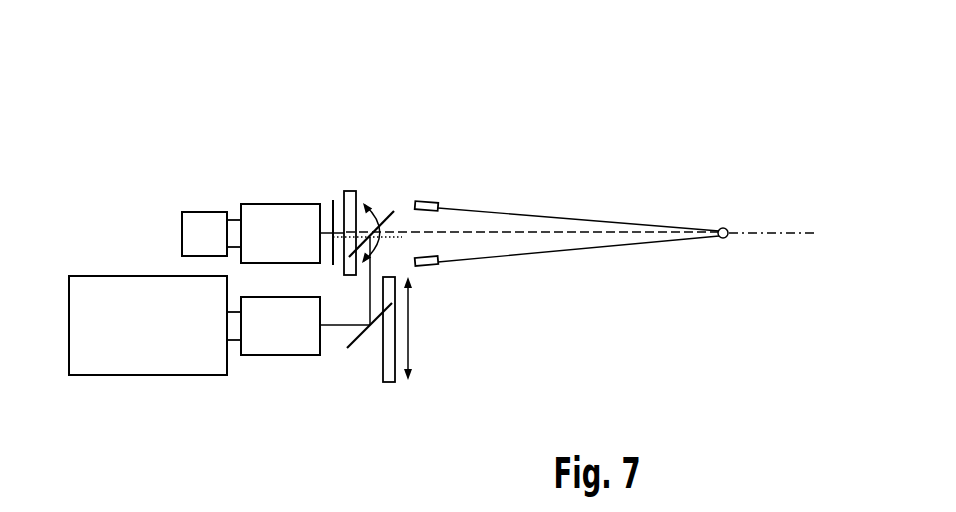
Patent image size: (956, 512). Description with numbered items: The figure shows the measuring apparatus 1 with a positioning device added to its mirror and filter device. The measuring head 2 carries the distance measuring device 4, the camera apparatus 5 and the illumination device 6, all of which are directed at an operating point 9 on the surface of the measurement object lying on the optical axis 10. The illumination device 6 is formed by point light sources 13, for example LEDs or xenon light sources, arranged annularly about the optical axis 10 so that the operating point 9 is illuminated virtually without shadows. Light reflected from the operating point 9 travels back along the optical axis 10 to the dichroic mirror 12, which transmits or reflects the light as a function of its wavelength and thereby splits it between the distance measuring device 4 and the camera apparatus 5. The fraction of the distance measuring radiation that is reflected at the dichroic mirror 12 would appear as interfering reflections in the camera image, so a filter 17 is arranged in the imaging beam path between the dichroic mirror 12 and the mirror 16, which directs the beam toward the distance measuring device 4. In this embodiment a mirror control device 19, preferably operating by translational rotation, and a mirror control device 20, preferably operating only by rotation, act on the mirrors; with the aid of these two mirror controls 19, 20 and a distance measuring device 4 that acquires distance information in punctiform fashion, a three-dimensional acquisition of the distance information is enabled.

The measuring apparatus 1 is at (134, 118).
The measuring head 2 is at (265, 157).
The distance measuring device 4 is at (137, 360).
The camera apparatus 5 is at (205, 222).
The illumination device 6 is at (424, 191).
The operating point 9 is at (727, 240).
The optical axis 10 is at (770, 234).
The dichroic mirror 12 is at (393, 213).
The point light sources 13 is at (433, 202).
The mirror 16 is at (358, 339).
The filter 17 is at (331, 202).
The mirror control device 19 is at (392, 392).
The mirror control device 20 is at (349, 182).